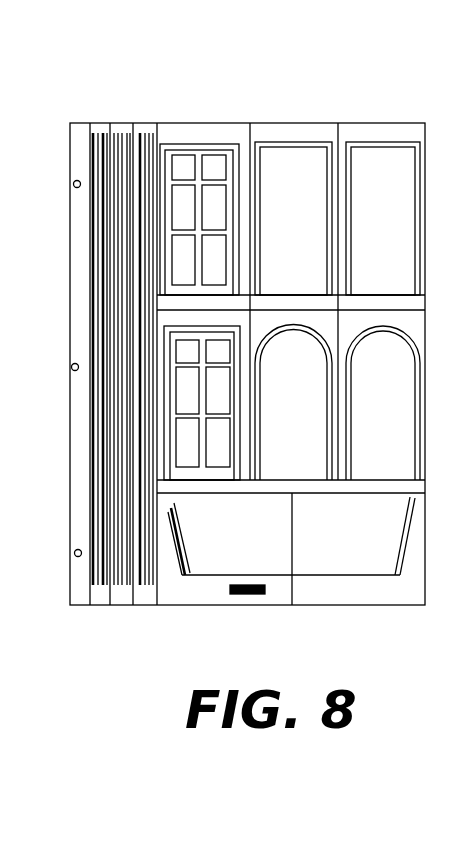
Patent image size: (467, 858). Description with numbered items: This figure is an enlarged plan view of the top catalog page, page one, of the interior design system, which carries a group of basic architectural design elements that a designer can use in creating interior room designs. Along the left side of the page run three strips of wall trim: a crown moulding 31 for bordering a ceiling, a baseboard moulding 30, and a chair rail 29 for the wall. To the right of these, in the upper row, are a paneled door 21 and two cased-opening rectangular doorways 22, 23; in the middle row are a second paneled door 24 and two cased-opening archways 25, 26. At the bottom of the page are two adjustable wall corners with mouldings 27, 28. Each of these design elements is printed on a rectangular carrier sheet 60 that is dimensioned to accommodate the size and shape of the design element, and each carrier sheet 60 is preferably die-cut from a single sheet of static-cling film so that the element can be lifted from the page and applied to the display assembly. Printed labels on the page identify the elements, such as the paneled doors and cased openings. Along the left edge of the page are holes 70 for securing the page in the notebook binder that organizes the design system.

The paneled door 21 is at (220, 193).
The cased-opening rectangular doorway 22 is at (297, 167).
The cased-opening rectangular doorway 23 is at (385, 187).
The paneled door 24 is at (193, 445).
The cased-opening archway 25 is at (298, 416).
The cased-opening archway 26 is at (390, 416).
The adjustable wall corner with moulding 27 is at (368, 556).
The adjustable wall corner with moulding 28 is at (248, 556).
The chair rail 29 is at (145, 130).
The baseboard moulding 30 is at (122, 130).
The crown moulding 31 is at (100, 135).
The carrier sheet 60 is at (203, 130).
The holes 70 is at (74, 181).